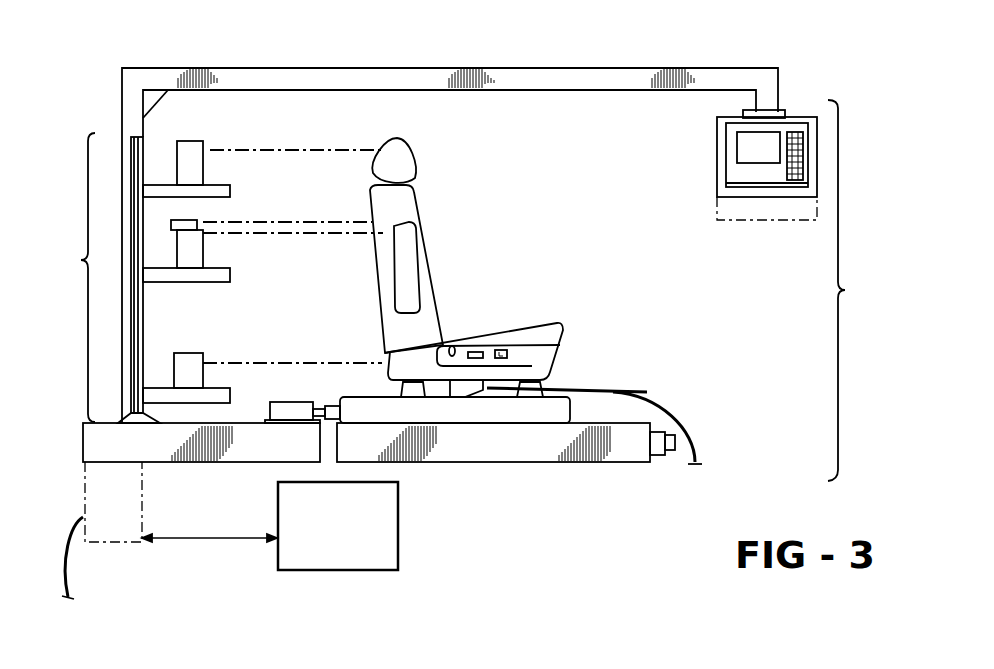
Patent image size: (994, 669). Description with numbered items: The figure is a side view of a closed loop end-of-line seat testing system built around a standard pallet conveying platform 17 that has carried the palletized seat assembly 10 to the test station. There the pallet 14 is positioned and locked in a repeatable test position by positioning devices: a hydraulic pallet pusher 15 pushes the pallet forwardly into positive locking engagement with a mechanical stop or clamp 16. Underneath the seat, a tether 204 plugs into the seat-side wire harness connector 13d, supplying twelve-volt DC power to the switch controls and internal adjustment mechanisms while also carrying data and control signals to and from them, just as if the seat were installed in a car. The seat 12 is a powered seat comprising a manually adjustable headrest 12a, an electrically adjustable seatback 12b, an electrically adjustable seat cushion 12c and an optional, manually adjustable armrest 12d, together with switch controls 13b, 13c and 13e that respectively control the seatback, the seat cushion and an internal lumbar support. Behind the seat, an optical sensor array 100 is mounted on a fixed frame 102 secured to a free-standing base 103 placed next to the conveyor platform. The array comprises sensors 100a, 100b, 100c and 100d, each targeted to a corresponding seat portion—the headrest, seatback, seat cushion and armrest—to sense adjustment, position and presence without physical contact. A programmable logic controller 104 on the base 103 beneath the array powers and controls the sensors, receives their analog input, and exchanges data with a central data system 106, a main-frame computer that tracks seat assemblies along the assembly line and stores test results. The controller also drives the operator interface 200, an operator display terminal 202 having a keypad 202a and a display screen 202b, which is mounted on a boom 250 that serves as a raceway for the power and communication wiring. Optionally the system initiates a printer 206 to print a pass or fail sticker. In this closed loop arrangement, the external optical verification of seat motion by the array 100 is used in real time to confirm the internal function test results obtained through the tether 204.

The palletized seat assembly 10 is at (598, 337).
The seat 12 is at (430, 248).
The headrest 12a is at (400, 165).
The seatback 12b is at (387, 192).
The seat cushion 12c is at (382, 373).
The armrest 12d is at (397, 248).
The switch control 13b is at (475, 352).
The switch control 13c is at (453, 344).
The wire harness connector 13d is at (460, 397).
The switch control 13e is at (507, 355).
The pallet 14 is at (547, 413).
The pallet pusher 15 is at (290, 422).
The mechanical stop or clamp 16 is at (577, 415).
The pallet conveying platform 17 is at (620, 460).
The optical sensor array 100 is at (131, 277).
The sensor 100a is at (193, 163).
The sensor 100b is at (190, 222).
The sensor 100c is at (193, 356).
The sensor 100d is at (207, 247).
The fixed frame 102 is at (129, 146).
The free-standing base 103 is at (103, 443).
The programmable logic controller 104 is at (150, 534).
The central data system 106 is at (398, 493).
The operator interface 200 is at (860, 290).
The operator display terminal 202 is at (717, 147).
The keypad 202a is at (797, 130).
The display screen 202b is at (753, 160).
The tether 204 is at (678, 405).
The printer 206 is at (723, 210).
The boom 250 is at (538, 70).